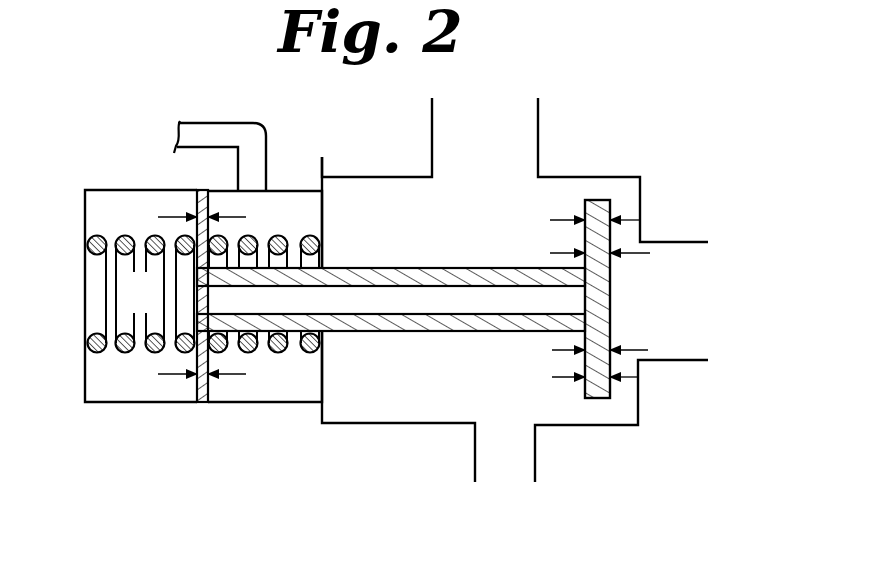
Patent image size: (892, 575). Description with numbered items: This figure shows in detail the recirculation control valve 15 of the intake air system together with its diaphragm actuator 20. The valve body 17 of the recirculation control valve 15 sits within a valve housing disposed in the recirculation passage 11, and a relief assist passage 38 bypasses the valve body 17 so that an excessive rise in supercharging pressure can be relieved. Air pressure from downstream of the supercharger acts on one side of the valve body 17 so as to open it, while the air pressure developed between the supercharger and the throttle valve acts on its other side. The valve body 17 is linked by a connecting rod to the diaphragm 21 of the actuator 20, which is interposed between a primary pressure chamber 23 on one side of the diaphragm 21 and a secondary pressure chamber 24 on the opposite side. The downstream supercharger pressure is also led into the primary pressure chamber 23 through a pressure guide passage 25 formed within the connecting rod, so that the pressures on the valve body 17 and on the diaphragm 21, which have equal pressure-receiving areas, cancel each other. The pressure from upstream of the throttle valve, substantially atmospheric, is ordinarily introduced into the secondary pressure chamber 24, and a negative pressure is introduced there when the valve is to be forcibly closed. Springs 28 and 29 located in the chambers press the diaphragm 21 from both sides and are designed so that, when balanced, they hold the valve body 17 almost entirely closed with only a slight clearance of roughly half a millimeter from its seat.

The recirculation passage 11 is at (540, 110).
The recirculation control valve 15 is at (600, 434).
The valve body 17 is at (600, 198).
The diaphragm actuator 20 is at (164, 296).
The diaphragm 21 is at (196, 388).
The primary pressure chamber 23 is at (95, 215).
The secondary pressure chamber 24 is at (245, 398).
The pressure guide passage 25 is at (409, 304).
The spring 28 is at (88, 344).
The spring 29 is at (306, 352).
The relief assist passage 38 is at (474, 464).